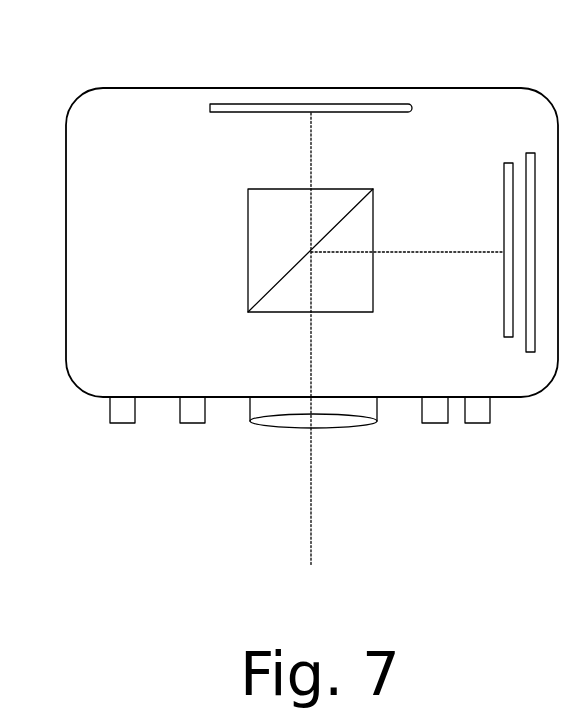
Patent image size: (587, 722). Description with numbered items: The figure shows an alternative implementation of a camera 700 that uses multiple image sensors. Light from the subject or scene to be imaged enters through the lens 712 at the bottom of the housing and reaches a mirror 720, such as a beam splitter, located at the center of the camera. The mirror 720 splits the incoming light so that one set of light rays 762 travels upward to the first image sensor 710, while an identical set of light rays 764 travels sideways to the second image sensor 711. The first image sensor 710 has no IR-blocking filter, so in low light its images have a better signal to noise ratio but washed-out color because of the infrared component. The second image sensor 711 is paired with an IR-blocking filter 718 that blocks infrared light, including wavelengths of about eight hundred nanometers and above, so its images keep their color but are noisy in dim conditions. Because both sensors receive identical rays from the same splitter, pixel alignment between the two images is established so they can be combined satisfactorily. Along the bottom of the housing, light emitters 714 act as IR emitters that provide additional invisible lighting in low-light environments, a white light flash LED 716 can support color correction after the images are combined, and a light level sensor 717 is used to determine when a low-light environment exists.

The camera 700 is at (433, 47).
The first image sensor 710 is at (208, 108).
The second image sensor 711 is at (528, 355).
The lens 712 is at (330, 428).
The light emitters 714 is at (180, 424).
The white light flash LED 716 is at (490, 424).
The light level sensor 717 is at (108, 424).
The IR-blocking filter 718 is at (508, 162).
The mirror 720 is at (247, 252).
The light rays 762 is at (309, 147).
The light rays 764 is at (475, 249).